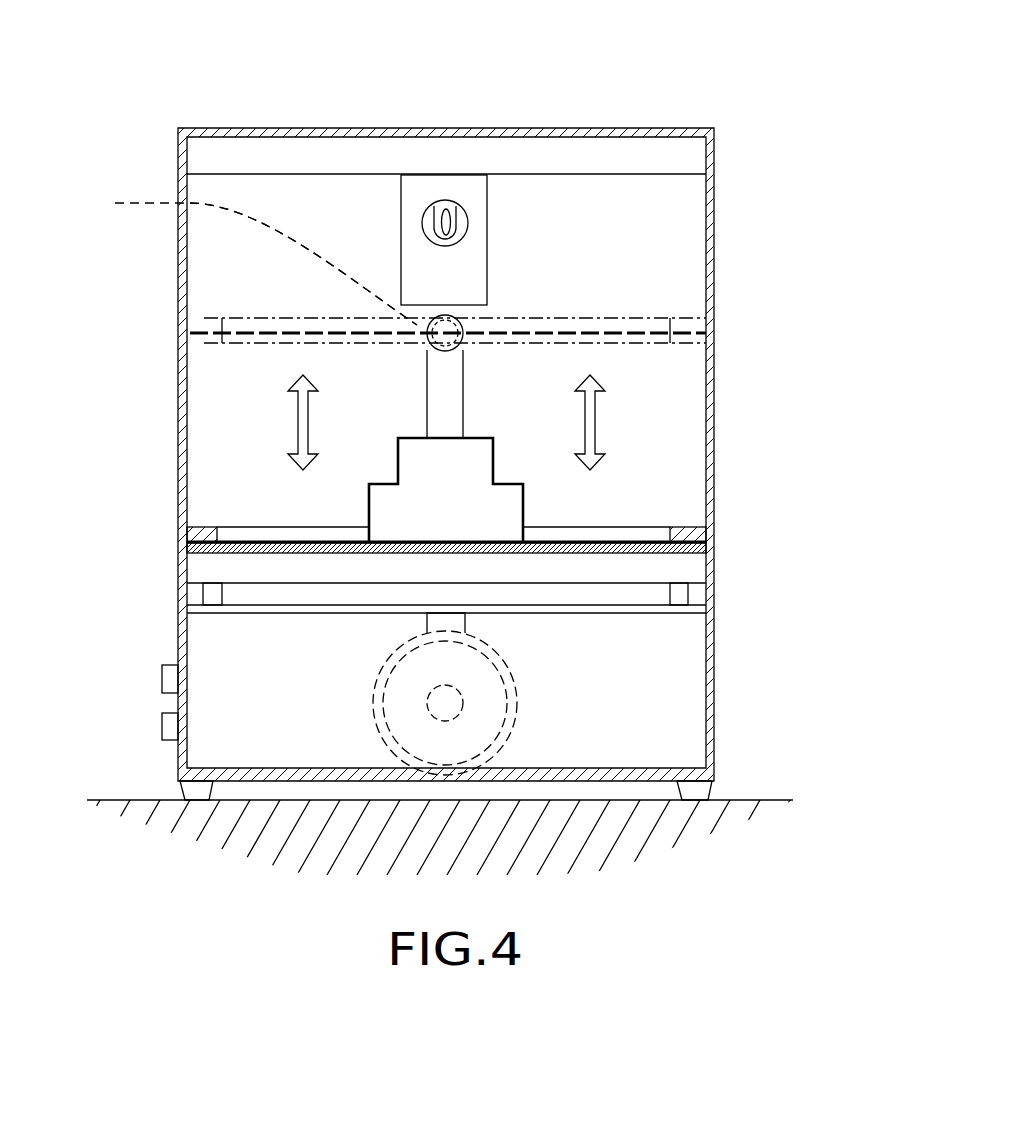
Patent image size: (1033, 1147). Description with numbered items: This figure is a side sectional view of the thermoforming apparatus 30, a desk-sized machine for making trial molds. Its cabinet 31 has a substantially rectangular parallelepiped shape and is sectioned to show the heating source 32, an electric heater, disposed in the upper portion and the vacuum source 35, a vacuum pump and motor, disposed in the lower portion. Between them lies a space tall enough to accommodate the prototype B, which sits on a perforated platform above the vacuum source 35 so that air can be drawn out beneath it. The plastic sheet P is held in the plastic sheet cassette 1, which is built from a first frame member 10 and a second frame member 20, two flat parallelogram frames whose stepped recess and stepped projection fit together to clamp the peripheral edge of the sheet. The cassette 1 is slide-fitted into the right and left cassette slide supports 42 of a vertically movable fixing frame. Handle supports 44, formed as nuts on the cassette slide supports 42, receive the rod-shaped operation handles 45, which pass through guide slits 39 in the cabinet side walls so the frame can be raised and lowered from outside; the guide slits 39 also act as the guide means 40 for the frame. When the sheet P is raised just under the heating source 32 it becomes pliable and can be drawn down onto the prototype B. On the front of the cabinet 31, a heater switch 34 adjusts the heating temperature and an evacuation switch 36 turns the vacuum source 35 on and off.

The thermoforming apparatus 30 is at (717, 103).
The cabinet 31 is at (714, 160).
The heating source 32 is at (465, 228).
The guide slits 39 is at (431, 398).
The guide means 40 is at (462, 357).
The cassette slide supports 42 is at (204, 320).
The handle supports 44 is at (232, 259).
The operation handles 45 is at (303, 264).
The plastic sheet P is at (495, 466).
The prototype B is at (477, 518).
The plastic sheet cassette 1 is at (87, 490).
The second frame member 20 is at (198, 540).
The first frame member 10 is at (187, 555).
The heater switch 34 is at (168, 682).
The vacuum source 35 is at (488, 697).
The evacuation switch 36 is at (168, 730).